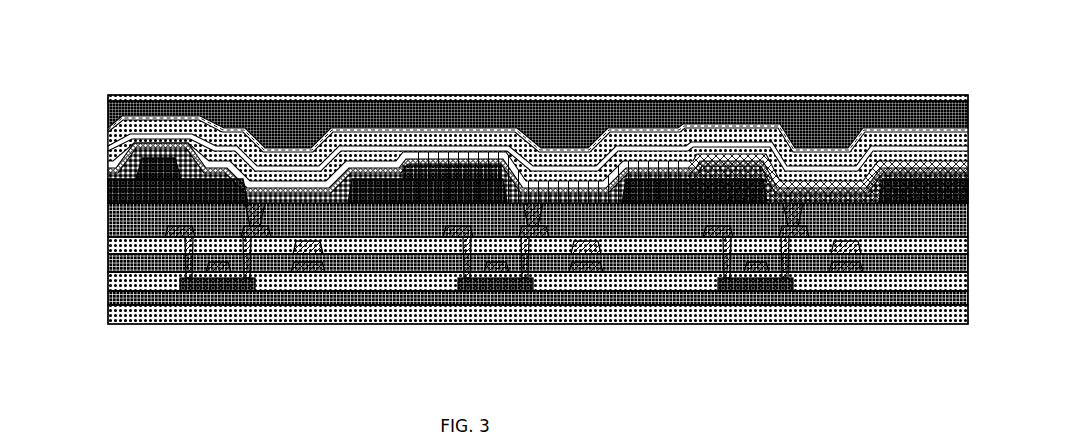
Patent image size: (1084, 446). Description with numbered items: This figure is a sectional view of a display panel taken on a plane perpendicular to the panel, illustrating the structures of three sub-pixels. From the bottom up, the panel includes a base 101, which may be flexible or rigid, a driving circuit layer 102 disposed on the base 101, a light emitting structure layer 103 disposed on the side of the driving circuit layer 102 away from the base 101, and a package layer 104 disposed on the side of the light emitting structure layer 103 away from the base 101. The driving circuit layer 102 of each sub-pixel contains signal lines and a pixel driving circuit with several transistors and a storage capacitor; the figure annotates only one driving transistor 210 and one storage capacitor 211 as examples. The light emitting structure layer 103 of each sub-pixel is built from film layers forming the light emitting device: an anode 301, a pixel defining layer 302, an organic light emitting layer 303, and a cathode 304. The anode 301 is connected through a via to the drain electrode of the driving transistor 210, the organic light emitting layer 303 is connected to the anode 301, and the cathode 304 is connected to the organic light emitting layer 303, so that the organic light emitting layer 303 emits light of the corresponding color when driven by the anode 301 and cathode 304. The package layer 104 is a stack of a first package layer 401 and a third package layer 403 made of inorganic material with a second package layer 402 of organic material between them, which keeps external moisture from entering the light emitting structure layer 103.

The base 101 is at (144, 318).
The driving circuit layer 102 is at (512, 221).
The light emitting structure layer 103 is at (512, 121).
The package layer 104 is at (512, 121).
The driving transistor 210 is at (220, 290).
The storage capacitor 211 is at (298, 271).
The anode 301 is at (241, 225).
The pixel defining layer 302 is at (180, 178).
The organic light emitting layer 303 is at (283, 178).
The cathode 304 is at (330, 130).
The first package layer 401 is at (432, 118).
The second package layer 402 is at (509, 108).
The third package layer 403 is at (590, 90).